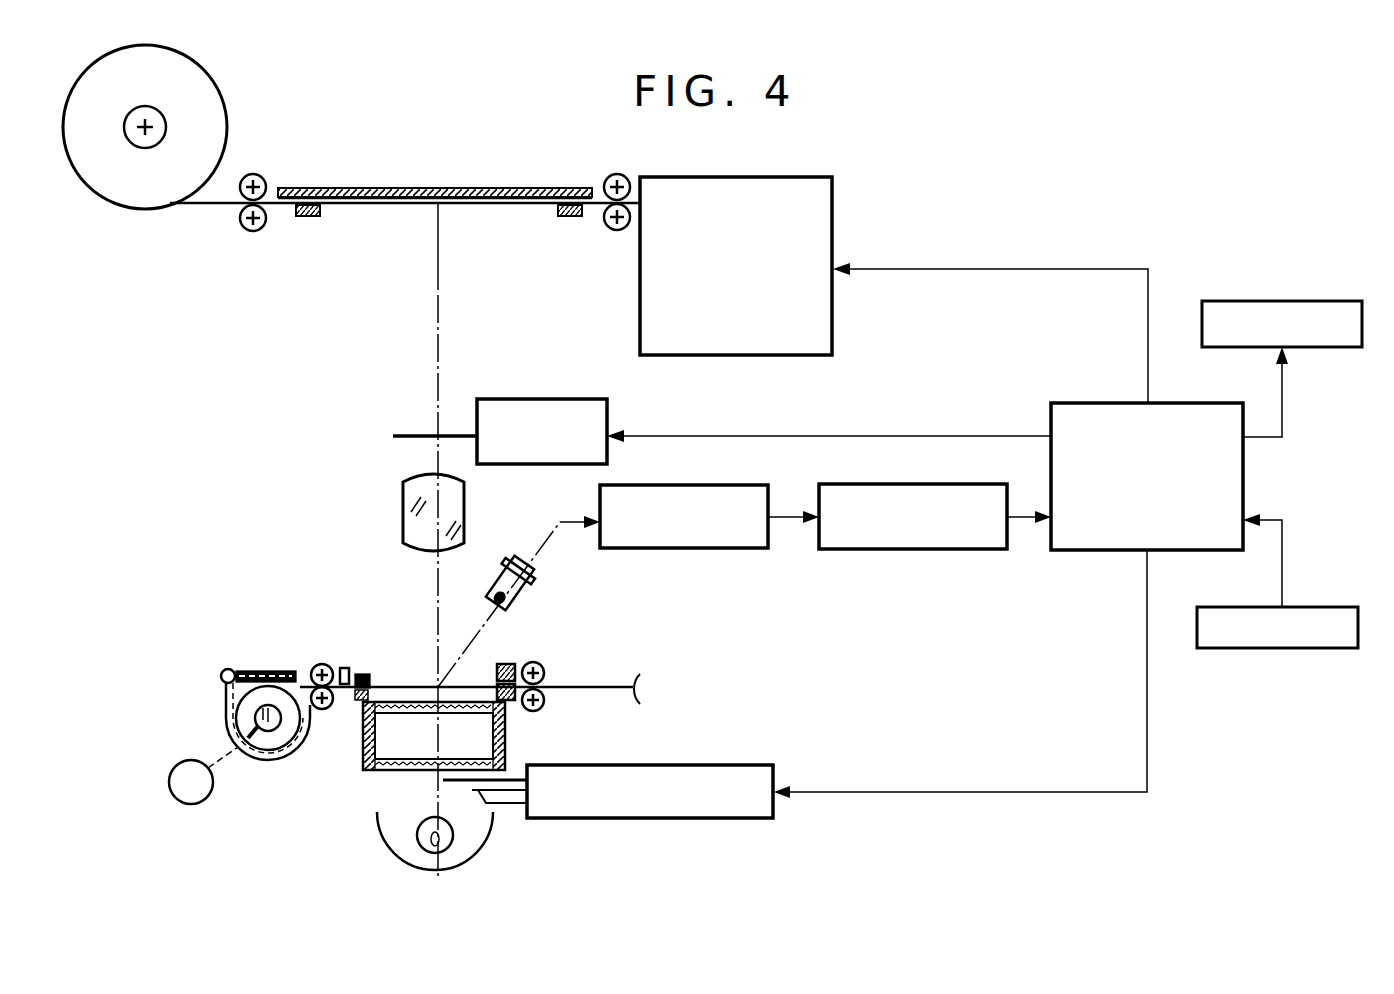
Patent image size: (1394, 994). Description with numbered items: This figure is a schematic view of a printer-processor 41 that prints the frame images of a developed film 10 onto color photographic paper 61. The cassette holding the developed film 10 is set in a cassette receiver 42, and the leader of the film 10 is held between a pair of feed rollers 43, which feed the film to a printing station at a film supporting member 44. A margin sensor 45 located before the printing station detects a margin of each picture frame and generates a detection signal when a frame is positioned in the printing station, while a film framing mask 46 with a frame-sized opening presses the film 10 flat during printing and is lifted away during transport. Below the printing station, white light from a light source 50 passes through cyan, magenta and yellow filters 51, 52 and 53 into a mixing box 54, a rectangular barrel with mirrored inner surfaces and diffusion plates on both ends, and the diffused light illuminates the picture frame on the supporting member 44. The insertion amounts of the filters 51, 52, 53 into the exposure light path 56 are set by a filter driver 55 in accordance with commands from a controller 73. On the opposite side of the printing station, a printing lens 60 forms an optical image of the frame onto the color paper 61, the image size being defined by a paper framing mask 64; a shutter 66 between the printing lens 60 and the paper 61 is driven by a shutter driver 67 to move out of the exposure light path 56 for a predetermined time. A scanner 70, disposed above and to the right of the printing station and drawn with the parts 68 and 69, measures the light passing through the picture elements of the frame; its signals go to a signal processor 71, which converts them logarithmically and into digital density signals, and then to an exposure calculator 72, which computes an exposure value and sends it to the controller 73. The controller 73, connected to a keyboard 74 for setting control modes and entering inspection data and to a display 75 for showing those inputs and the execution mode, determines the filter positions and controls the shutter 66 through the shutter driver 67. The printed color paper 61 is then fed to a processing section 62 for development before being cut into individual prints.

The developed film 10 is at (596, 670).
The printer-processor 41 is at (975, 205).
The cassette receiver 42 is at (212, 711).
The feed rollers 43 is at (324, 664).
The film supporting member 44 is at (342, 718).
The margin sensor 45 is at (348, 666).
The film framing mask 46 is at (510, 666).
The light source 50 is at (418, 838).
The cyan filter 51 is at (513, 782).
The magenta filter 52 is at (487, 815).
The yellow filter 53 is at (515, 805).
The mixing box 54 is at (367, 768).
The filter driver 55 is at (637, 765).
The exposure light path 56 is at (435, 612).
The printing lens 60 is at (464, 492).
The color photographic paper 61 is at (387, 203).
The processing section 62 is at (745, 177).
The paper framing mask 64 is at (312, 216).
The shutter 66 is at (410, 432).
The shutter driver 67 is at (500, 399).
The photosensor 68 is at (500, 588).
The filter 69 is at (524, 562).
The scanner 70 is at (532, 588).
The signal processor 71 is at (700, 548).
The exposure calculator 72 is at (925, 549).
The controller 73 is at (1160, 403).
The keyboard 74 is at (1215, 612).
The display 75 is at (1218, 352).